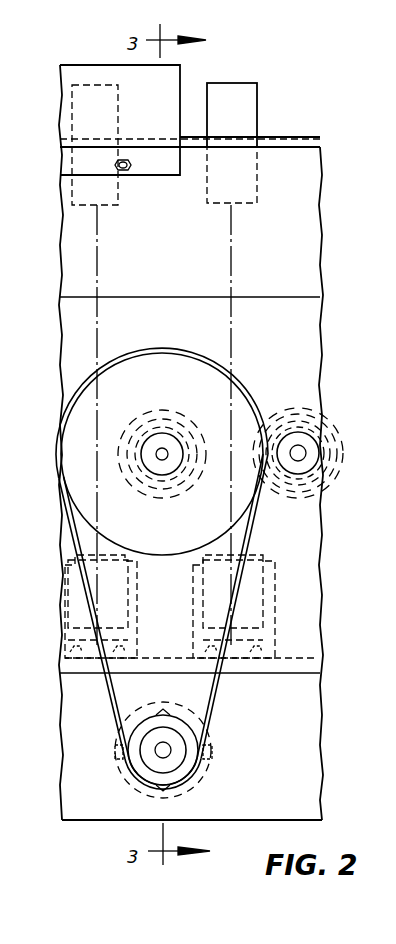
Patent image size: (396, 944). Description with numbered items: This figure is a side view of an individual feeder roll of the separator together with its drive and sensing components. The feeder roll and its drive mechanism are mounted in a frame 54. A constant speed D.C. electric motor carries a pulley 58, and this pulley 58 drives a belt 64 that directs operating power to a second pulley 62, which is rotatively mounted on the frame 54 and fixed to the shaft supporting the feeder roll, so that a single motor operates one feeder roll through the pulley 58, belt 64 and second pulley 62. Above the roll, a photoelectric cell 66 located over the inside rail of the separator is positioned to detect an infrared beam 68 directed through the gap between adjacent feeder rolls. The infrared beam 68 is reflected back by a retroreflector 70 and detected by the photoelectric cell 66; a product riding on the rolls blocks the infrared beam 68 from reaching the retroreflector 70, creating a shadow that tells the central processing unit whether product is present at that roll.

The frame 54 is at (305, 165).
The pulley 58 is at (190, 765).
The second pulley 62 is at (247, 486).
The belt 64 is at (218, 697).
The photoelectric cell 66 is at (250, 92).
The infrared beam 68 is at (231, 243).
The retroreflector 70 is at (258, 605).